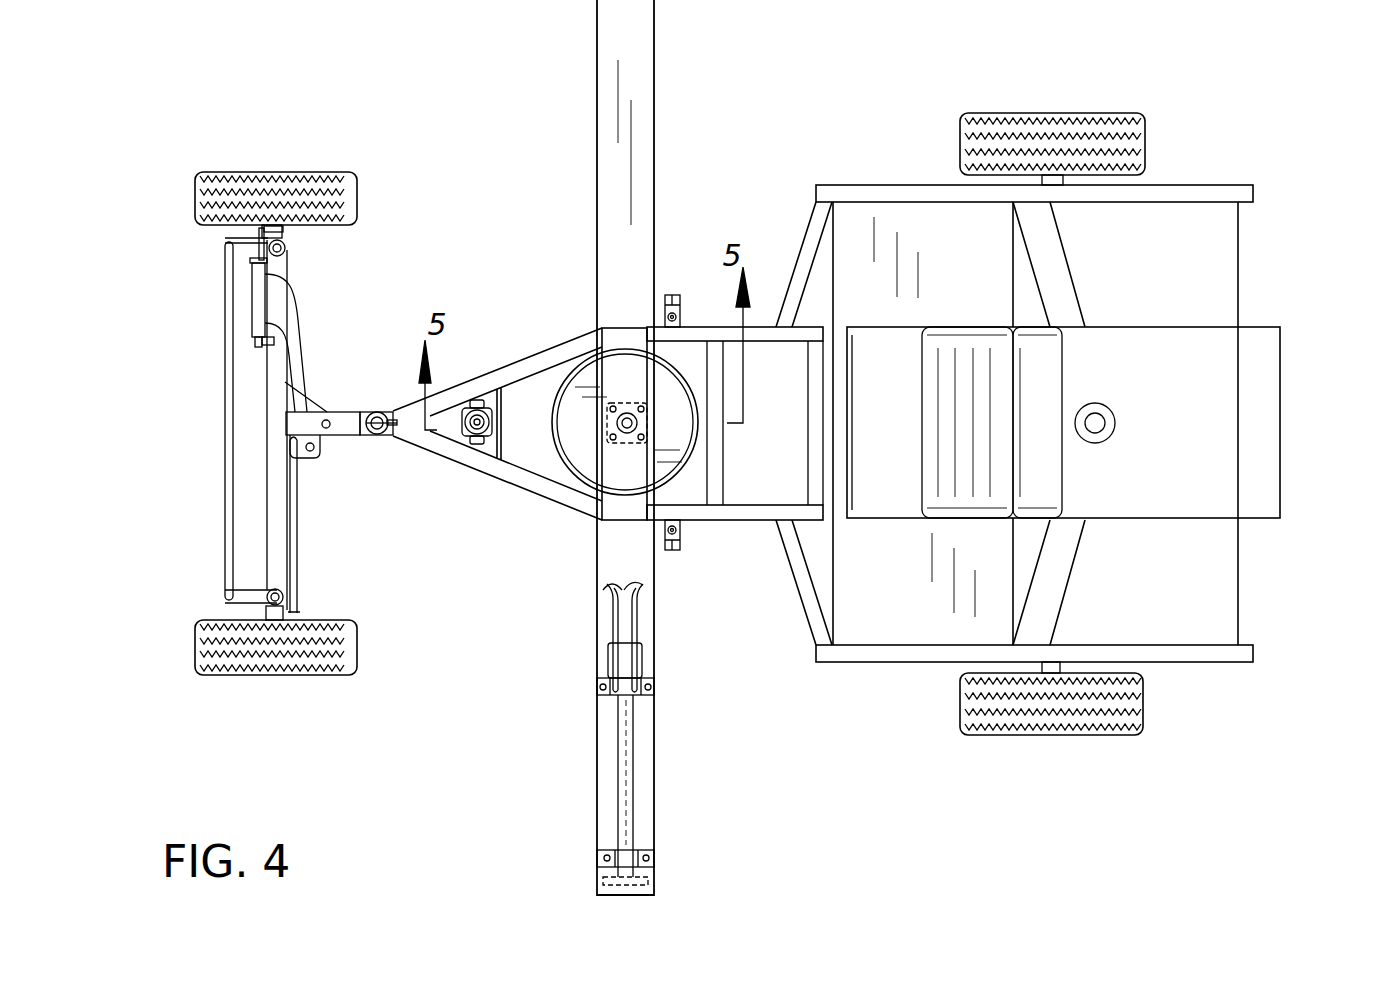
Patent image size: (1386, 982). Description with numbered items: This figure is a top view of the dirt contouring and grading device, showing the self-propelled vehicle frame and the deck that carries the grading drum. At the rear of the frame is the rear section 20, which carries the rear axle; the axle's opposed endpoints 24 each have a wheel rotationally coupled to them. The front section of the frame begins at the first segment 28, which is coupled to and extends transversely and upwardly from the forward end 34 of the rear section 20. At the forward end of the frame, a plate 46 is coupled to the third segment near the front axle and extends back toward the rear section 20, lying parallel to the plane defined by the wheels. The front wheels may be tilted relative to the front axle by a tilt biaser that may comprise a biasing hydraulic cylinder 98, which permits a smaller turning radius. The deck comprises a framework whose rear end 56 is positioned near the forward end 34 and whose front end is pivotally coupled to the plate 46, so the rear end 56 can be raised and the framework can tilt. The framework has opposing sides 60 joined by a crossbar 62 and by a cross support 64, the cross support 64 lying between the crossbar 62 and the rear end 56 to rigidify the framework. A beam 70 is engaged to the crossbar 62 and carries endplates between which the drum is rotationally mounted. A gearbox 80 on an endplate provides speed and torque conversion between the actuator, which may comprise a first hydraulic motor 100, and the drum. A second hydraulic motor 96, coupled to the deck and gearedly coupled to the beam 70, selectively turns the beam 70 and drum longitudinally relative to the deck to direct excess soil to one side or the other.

The rear section 20 is at (905, 662).
The opposed endpoints 24 is at (1058, 665).
The first segment 28 is at (797, 557).
The forward end 34 is at (848, 448).
The plate 46 is at (288, 605).
The rear end 56 is at (823, 518).
The opposing sides 60 is at (778, 505).
The crossbar 62 is at (627, 458).
The cross support 64 is at (712, 458).
The beam 70 is at (627, 27).
The gearbox 80 is at (640, 884).
The second hydraulic motor 96 is at (477, 436).
The biasing hydraulic cylinder 98 is at (255, 295).
The first hydraulic motor 100 is at (623, 659).